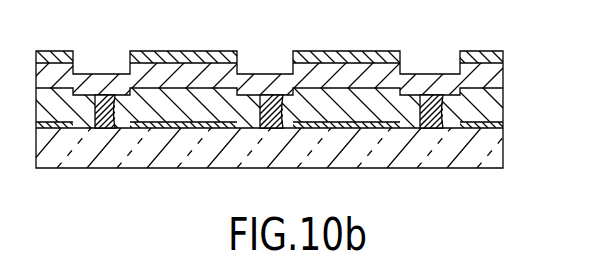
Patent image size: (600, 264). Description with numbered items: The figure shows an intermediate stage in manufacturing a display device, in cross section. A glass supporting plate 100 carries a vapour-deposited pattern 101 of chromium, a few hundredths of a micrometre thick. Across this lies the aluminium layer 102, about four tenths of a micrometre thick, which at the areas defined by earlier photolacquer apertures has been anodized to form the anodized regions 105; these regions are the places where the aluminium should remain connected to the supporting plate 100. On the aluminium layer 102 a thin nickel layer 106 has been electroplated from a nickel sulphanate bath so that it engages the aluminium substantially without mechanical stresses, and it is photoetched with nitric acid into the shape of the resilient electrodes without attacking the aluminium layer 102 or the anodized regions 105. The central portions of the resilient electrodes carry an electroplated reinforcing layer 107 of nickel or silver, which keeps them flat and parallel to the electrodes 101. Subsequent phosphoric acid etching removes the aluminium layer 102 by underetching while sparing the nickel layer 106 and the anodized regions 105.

The glass supporting plate 100 is at (382, 150).
The pattern of chromium 101 is at (58, 126).
The aluminium layer 102 is at (162, 107).
The anodized regions 105 is at (110, 129).
The nickel layer 106 is at (97, 84).
The reinforcing layer 107 is at (53, 58).